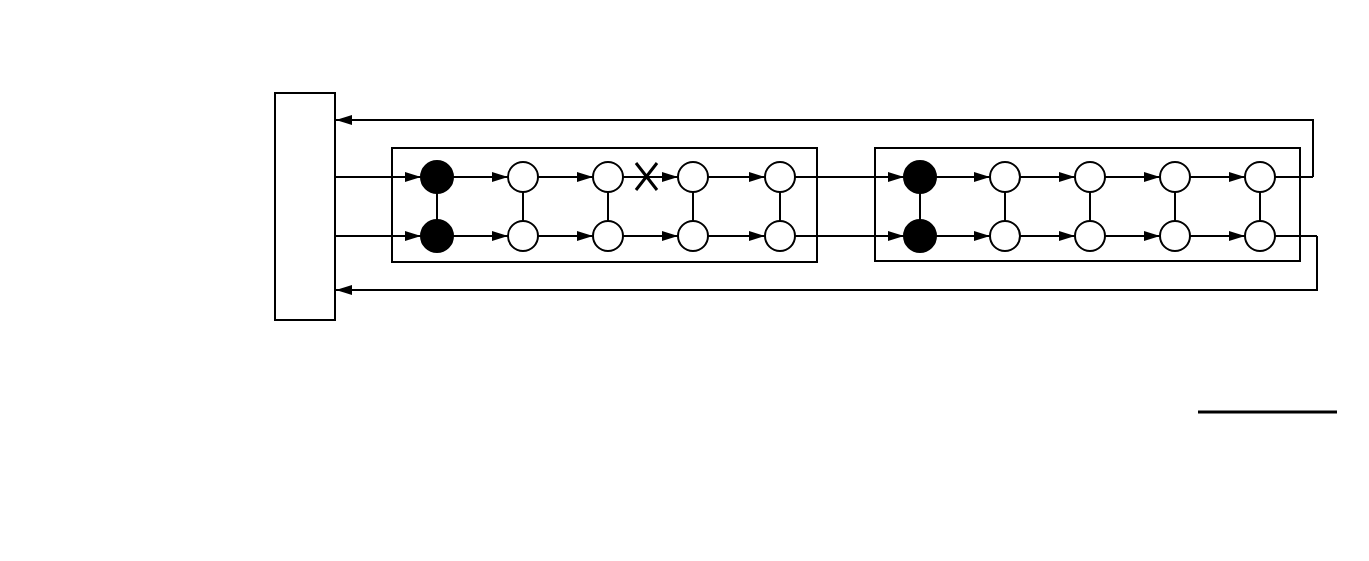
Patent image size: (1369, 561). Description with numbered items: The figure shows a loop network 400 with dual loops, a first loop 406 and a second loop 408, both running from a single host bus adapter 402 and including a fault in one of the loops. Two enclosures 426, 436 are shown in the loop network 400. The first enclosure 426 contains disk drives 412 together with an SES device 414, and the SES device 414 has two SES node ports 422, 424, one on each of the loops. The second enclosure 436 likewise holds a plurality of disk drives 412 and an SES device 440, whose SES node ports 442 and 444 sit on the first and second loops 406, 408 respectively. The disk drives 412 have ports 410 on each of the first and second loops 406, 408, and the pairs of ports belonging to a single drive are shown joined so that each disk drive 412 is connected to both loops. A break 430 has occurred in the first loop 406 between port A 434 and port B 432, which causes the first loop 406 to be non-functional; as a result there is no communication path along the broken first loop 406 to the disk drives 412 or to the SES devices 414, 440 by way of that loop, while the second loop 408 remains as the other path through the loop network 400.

The loop network 400 is at (450, 45).
The host bus adapter 402 is at (277, 198).
The first loop 406 is at (1022, 83).
The second loop 408 is at (1123, 290).
The ports 410 is at (688, 249).
The disk drives 412 is at (1243, 198).
The SES device 414 is at (413, 207).
The SES node port 422 is at (437, 161).
The SES node port 424 is at (445, 249).
The enclosure 426 is at (760, 148).
The break 430 is at (647, 162).
The port B 432 is at (698, 162).
The port A 434 is at (600, 162).
The second enclosure 436 is at (1123, 147).
The SES device 440 is at (895, 252).
The SES node port 442 is at (917, 162).
The SES node port 444 is at (933, 250).